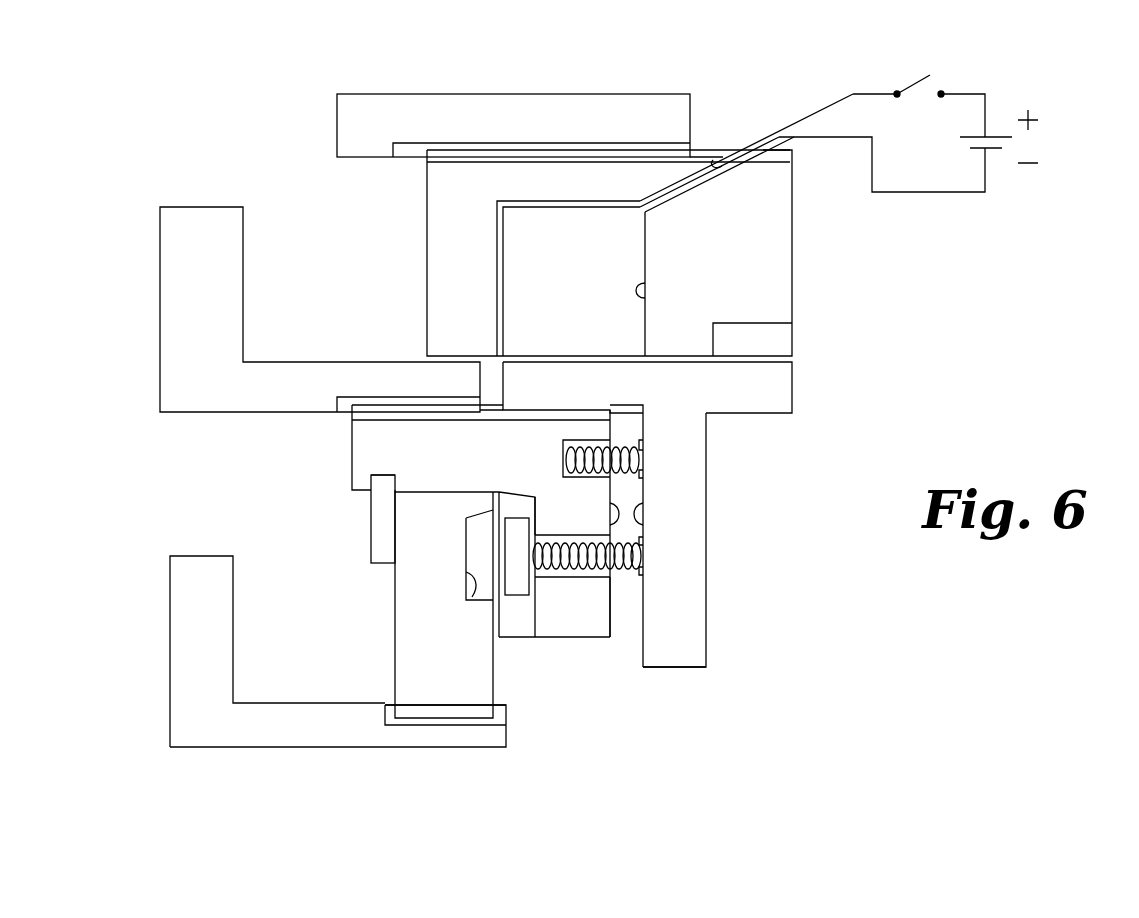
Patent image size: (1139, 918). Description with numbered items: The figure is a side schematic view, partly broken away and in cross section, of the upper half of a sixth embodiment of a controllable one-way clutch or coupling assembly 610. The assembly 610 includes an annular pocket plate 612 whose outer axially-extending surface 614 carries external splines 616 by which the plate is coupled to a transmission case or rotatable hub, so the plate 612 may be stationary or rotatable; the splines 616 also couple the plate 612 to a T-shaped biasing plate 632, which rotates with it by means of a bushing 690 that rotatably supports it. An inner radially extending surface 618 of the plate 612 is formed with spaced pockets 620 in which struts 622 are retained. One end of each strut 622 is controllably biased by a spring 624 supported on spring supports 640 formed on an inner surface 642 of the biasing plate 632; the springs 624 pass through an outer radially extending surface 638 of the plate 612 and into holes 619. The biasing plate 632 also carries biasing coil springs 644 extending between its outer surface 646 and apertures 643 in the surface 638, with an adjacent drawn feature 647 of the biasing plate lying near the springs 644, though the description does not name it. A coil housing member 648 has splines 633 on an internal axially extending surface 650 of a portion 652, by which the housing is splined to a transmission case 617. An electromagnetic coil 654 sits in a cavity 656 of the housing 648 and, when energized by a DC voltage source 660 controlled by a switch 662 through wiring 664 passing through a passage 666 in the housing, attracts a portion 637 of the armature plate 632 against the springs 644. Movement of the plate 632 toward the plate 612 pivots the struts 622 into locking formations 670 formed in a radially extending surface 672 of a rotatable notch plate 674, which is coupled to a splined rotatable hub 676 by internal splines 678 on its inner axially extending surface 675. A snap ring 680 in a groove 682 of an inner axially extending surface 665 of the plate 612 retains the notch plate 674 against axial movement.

The controllable one-way clutch or coupling assembly 610 is at (823, 414).
The annular pocket plate 612 is at (577, 642).
The outer axially-extending surface 614 is at (380, 413).
The external splines 616 is at (407, 398).
The transmission case 617 is at (523, 94).
The inner radially extending surface 618 is at (495, 506).
The holes 619 is at (563, 567).
The pockets 620 is at (515, 610).
The struts 622 is at (517, 600).
The spring 624 is at (590, 567).
The T-shaped biasing plate 632 is at (706, 638).
The splines 633 is at (662, 148).
The portion 637 is at (585, 385).
The outer radially extending surface 638 is at (617, 505).
The spring supports 640 is at (643, 565).
The inner surface 642 is at (643, 640).
The apertures 643 is at (570, 443).
The biasing coil springs 644 is at (637, 443).
The outer surface 646 is at (643, 505).
The armature plate 647 is at (643, 452).
The coil housing member 648 is at (792, 291).
The internal axially extending surface 650 is at (548, 147).
The portion 652 is at (607, 183).
The electromagnetic coil 654 is at (642, 250).
The cavity 656 is at (660, 283).
The DC voltage source 660 is at (1000, 130).
The switch 662 is at (925, 88).
The wiring 664 is at (807, 117).
The inner axially extending surface 665 is at (430, 505).
The passage 666 is at (716, 164).
The locking formations 670 is at (478, 555).
The radially extending surface 672 is at (470, 583).
The notch plate 674 is at (397, 685).
The inner axially extending surface 675 is at (447, 707).
The splined rotatable hub 676 is at (170, 747).
The internal splines 678 is at (440, 717).
The snap ring 680 is at (371, 523).
The groove 682 is at (380, 487).
The bushing 690 is at (793, 343).